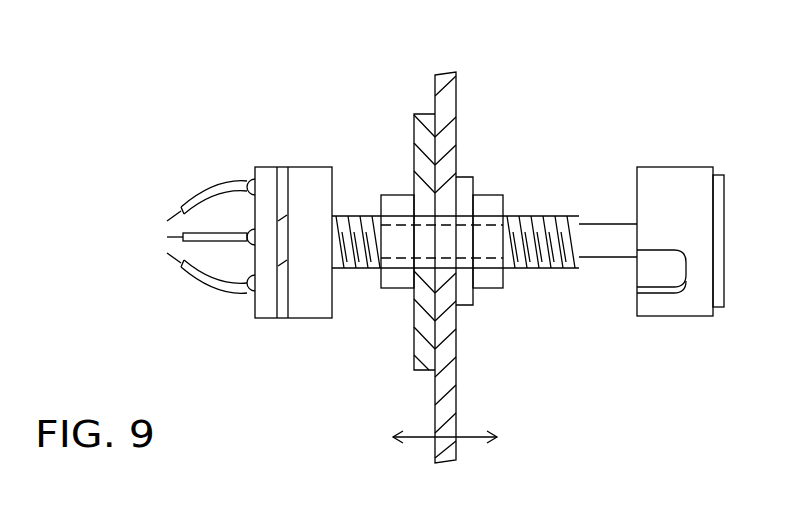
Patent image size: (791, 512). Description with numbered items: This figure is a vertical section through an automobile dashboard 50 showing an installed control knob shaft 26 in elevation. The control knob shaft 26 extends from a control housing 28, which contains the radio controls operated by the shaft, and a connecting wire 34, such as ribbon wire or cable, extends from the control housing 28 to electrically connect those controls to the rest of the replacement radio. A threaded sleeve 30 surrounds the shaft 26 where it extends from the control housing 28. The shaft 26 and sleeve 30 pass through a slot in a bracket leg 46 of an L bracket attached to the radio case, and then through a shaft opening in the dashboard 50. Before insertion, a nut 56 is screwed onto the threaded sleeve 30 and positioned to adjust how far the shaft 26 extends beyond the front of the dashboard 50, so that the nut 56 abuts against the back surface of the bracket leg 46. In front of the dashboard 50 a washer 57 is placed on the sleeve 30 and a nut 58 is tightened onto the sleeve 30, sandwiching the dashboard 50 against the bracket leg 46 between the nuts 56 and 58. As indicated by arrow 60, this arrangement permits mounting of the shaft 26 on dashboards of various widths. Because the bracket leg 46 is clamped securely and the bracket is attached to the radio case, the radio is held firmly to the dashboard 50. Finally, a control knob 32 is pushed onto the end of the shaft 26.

The control knob shaft 26 is at (614, 250).
The control housing 28 is at (300, 313).
The threaded sleeve 30 is at (545, 270).
The control knob 32 is at (670, 308).
The connecting wire 34 is at (202, 197).
The bracket leg 46 is at (420, 143).
The dashboard 50 is at (452, 95).
The nut 56 is at (398, 285).
The washer 57 is at (465, 180).
The nut 58 is at (500, 200).
The arrow 60 is at (467, 437).